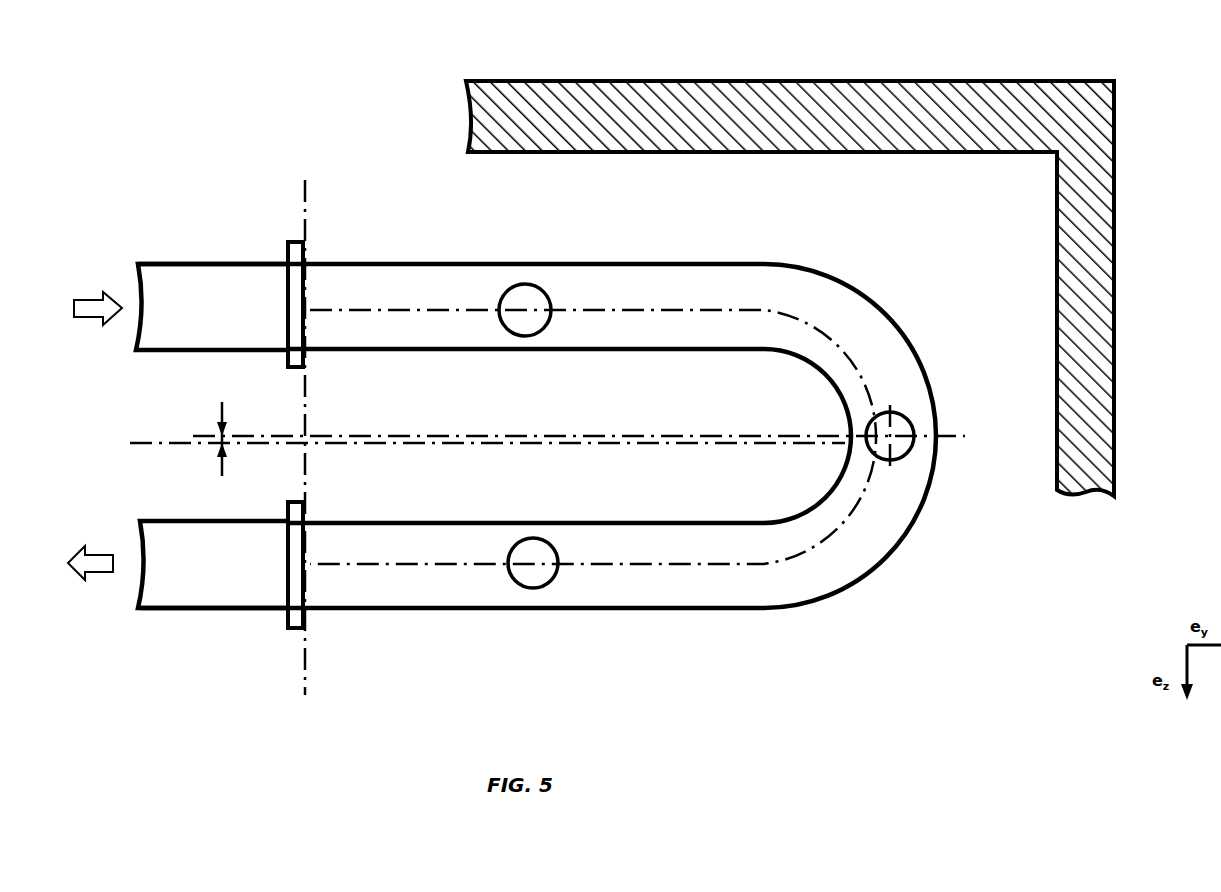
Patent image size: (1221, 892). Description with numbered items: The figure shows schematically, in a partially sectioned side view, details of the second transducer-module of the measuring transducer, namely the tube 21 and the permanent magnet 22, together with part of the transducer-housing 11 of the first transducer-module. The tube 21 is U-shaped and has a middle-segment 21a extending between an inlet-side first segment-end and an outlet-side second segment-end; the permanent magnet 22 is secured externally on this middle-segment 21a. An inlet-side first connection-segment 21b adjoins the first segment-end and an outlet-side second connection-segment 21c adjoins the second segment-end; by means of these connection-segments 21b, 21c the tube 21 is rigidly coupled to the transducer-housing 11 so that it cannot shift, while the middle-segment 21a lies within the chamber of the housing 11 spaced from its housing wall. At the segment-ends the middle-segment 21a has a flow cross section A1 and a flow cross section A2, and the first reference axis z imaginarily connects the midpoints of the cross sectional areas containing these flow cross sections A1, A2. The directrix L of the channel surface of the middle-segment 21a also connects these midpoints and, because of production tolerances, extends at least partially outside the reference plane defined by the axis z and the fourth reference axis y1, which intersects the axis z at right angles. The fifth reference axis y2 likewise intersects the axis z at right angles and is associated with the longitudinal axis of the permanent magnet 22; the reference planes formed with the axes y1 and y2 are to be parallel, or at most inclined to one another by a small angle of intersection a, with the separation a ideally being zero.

The transducer-housing 11 is at (1097, 130).
The tube 21 is at (537, 436).
The middle-segment 21a is at (683, 587).
The first connection-segment 21b is at (218, 283).
The second connection-segment 21c is at (180, 580).
The first permanent magnet 22 is at (895, 445).
The flow cross section of the first segment-end A1 is at (325, 257).
The flow cross section of the second segment-end A2 is at (314, 622).
The directrix L is at (832, 532).
The first reference axis z is at (303, 436).
The fourth reference axis y1 is at (473, 443).
The fifth reference axis y2 is at (611, 436).
The angle of intersection a is at (214, 439).